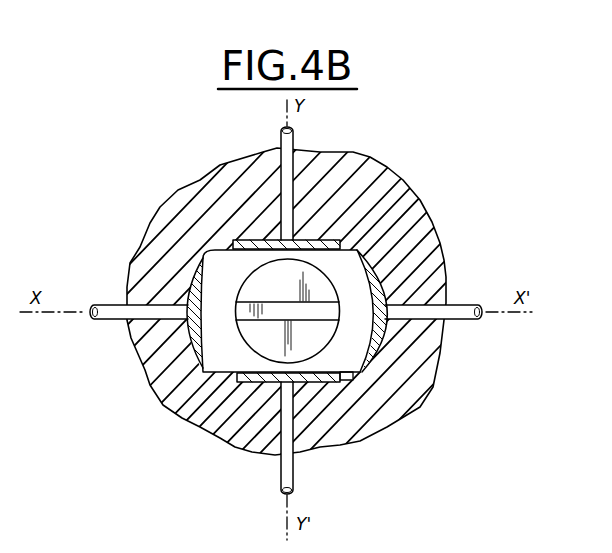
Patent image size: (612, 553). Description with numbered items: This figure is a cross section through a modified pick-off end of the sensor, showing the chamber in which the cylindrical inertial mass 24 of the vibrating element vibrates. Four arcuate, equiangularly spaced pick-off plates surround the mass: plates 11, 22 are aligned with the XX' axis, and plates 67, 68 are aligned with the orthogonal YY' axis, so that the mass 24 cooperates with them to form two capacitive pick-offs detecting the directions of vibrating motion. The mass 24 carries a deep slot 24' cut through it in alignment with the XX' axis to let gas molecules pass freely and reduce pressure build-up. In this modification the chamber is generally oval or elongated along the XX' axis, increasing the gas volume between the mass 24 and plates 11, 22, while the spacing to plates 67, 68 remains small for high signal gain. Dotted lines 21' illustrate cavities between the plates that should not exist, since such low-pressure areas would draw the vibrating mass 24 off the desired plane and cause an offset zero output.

The pick-off plate 11 is at (155, 390).
The dotted lines 21' is at (162, 218).
The pick-off plate 22 is at (360, 290).
The slot 24' is at (349, 212).
The inertial mass 24 is at (340, 348).
The pick-off plate 67 is at (323, 312).
The pick-off plate 68 is at (245, 385).